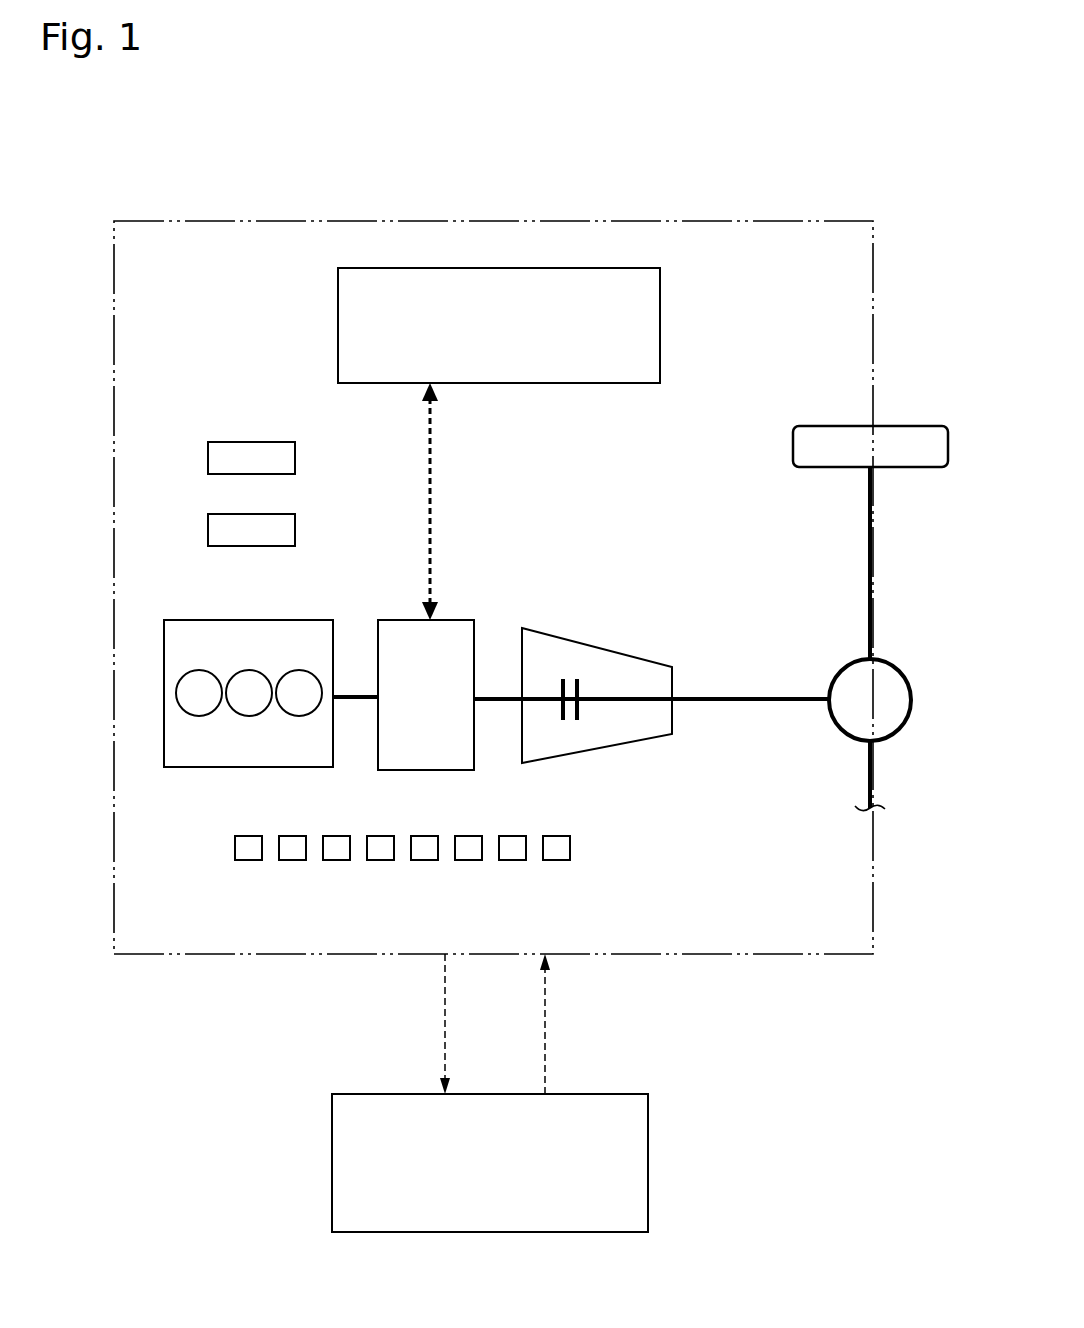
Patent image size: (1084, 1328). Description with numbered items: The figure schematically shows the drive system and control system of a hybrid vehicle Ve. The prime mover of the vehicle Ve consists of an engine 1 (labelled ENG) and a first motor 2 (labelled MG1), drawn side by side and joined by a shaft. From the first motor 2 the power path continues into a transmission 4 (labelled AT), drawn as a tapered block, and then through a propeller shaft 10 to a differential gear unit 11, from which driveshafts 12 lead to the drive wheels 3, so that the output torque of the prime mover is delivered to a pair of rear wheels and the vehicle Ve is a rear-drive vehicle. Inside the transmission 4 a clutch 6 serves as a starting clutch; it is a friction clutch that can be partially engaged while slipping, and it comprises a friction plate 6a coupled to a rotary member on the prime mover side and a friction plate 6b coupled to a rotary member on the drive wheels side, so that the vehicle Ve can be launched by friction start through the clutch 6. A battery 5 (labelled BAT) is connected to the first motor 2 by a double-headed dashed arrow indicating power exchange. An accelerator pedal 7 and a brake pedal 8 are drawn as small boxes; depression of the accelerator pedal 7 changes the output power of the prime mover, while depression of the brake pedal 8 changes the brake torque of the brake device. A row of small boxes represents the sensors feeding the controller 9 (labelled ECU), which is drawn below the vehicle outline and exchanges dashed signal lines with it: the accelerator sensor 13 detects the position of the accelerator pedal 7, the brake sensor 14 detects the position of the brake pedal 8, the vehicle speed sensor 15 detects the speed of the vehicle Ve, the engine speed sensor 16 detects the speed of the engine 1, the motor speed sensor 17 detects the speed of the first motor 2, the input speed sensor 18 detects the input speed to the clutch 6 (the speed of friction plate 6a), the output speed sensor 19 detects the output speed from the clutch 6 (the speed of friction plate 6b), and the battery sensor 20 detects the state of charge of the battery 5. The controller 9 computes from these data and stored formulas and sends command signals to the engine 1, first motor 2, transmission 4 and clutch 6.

The hybrid vehicle Ve is at (800, 200).
The engine 1 is at (314, 620).
The first motor 2 is at (452, 620).
The drive wheels 3 is at (912, 426).
The transmission 4 is at (635, 657).
The battery 5 is at (660, 327).
The clutch 6 is at (575, 668).
The friction plate 6a is at (562, 722).
The friction plate 6b is at (580, 722).
The accelerator pedal 7 is at (295, 458).
The brake pedal 8 is at (295, 530).
The controller 9 is at (648, 1160).
The propeller shaft 10 is at (762, 703).
The differential gear unit 11 is at (912, 703).
The driveshafts 12 is at (873, 552).
The accelerator sensor 13 is at (249, 860).
The brake sensor 14 is at (293, 860).
The vehicle speed sensor 15 is at (337, 860).
The engine speed sensor 16 is at (381, 860).
The motor speed sensor 17 is at (425, 860).
The input speed sensor 18 is at (469, 860).
The output speed sensor 19 is at (513, 860).
The battery sensor 20 is at (557, 860).